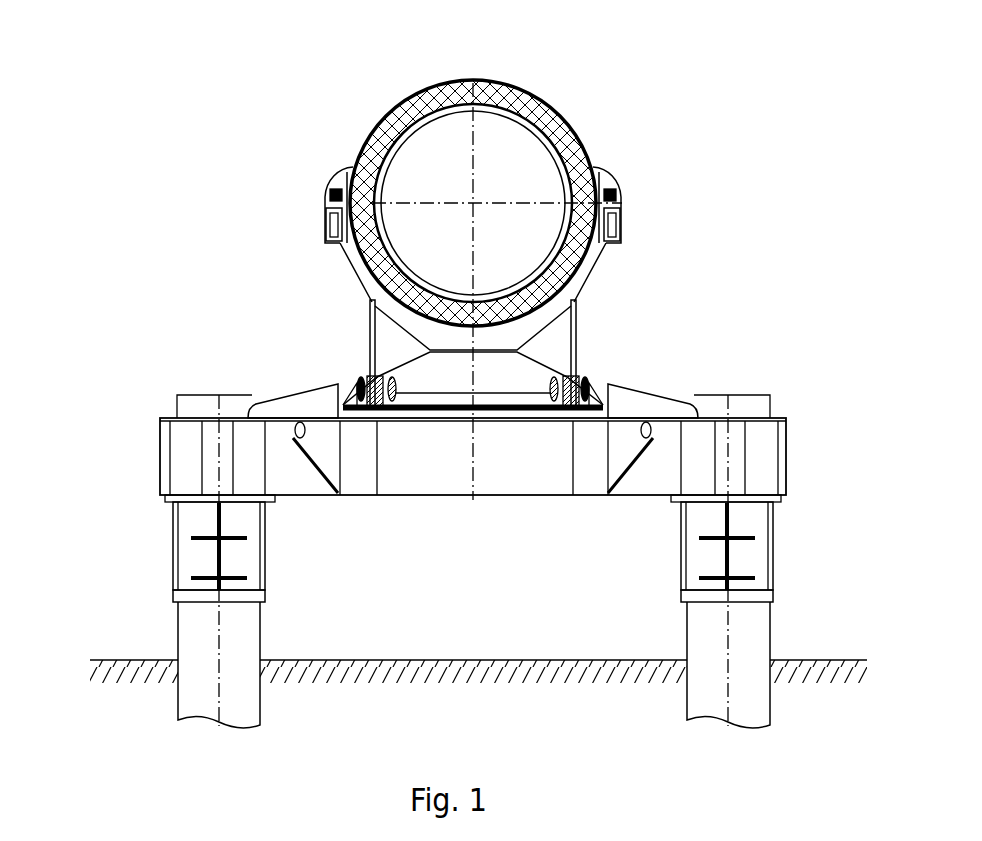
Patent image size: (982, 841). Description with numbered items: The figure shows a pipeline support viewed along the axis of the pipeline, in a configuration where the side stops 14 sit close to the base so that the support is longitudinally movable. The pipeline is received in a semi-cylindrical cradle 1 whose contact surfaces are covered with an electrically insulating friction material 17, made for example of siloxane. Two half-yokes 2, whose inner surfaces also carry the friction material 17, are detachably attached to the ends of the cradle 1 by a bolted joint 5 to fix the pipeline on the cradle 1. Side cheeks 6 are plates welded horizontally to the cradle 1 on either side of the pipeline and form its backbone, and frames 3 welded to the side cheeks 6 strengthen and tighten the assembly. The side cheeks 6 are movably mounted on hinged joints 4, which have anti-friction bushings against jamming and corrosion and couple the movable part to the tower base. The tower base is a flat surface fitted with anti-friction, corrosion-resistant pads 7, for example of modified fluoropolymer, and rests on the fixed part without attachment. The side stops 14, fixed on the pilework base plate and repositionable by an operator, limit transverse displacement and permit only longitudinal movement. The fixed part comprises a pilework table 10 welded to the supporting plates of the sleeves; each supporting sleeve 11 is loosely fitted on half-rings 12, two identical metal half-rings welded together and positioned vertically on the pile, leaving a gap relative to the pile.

The cradle 1 is at (333, 247).
The half-yokes 2 is at (340, 188).
The frames 3 is at (360, 275).
The hinged joint 4 is at (347, 383).
The bolted joint 5 is at (330, 200).
The side cheeks 6 is at (365, 333).
The anti-friction pads 7 is at (390, 412).
The pilework table 10 is at (293, 468).
The supporting sleeve 11 is at (205, 522).
The half-rings 12 is at (200, 598).
The side stops 14 is at (300, 400).
The dielectric friction material 17 is at (397, 113).